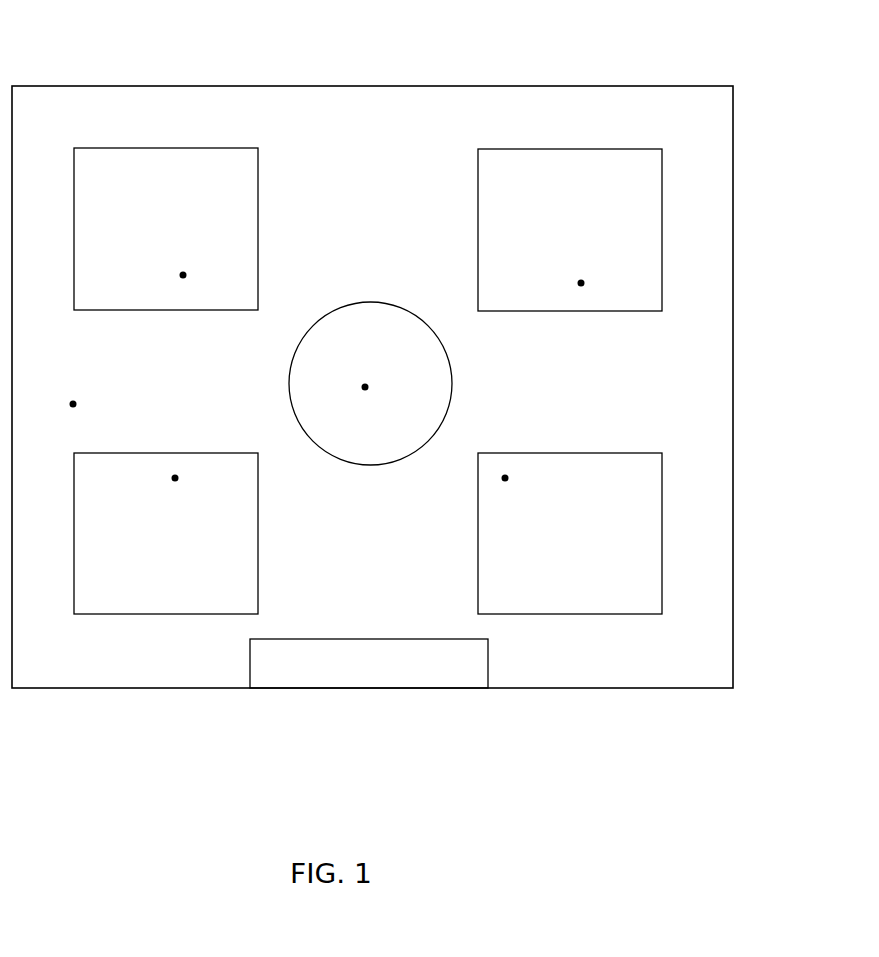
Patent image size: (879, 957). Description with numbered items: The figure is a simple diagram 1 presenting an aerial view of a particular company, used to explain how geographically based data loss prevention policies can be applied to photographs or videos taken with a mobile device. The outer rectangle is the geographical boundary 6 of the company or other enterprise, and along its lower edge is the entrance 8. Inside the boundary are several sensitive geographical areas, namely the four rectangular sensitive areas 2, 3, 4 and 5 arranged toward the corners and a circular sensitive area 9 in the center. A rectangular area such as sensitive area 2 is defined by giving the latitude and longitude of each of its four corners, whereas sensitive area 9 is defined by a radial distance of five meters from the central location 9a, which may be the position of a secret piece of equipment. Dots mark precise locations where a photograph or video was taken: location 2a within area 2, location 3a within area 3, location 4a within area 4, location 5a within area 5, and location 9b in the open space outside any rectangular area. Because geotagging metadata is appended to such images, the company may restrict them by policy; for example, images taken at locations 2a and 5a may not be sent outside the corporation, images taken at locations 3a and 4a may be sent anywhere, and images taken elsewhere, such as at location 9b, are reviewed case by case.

The diagram 1 is at (97, 776).
The sensitive area 2 is at (250, 177).
The location 2a is at (180, 275).
The sensitive area 3 is at (652, 179).
The location 3a is at (579, 283).
The sensitive area 4 is at (247, 482).
The location 4a is at (172, 478).
The sensitive area 5 is at (651, 482).
The location 5a is at (507, 479).
The geographical boundary 6 is at (624, 86).
The entrance 8 is at (458, 678).
The sensitive area 9 is at (383, 335).
The location 9a is at (367, 389).
The location 9b is at (76, 404).